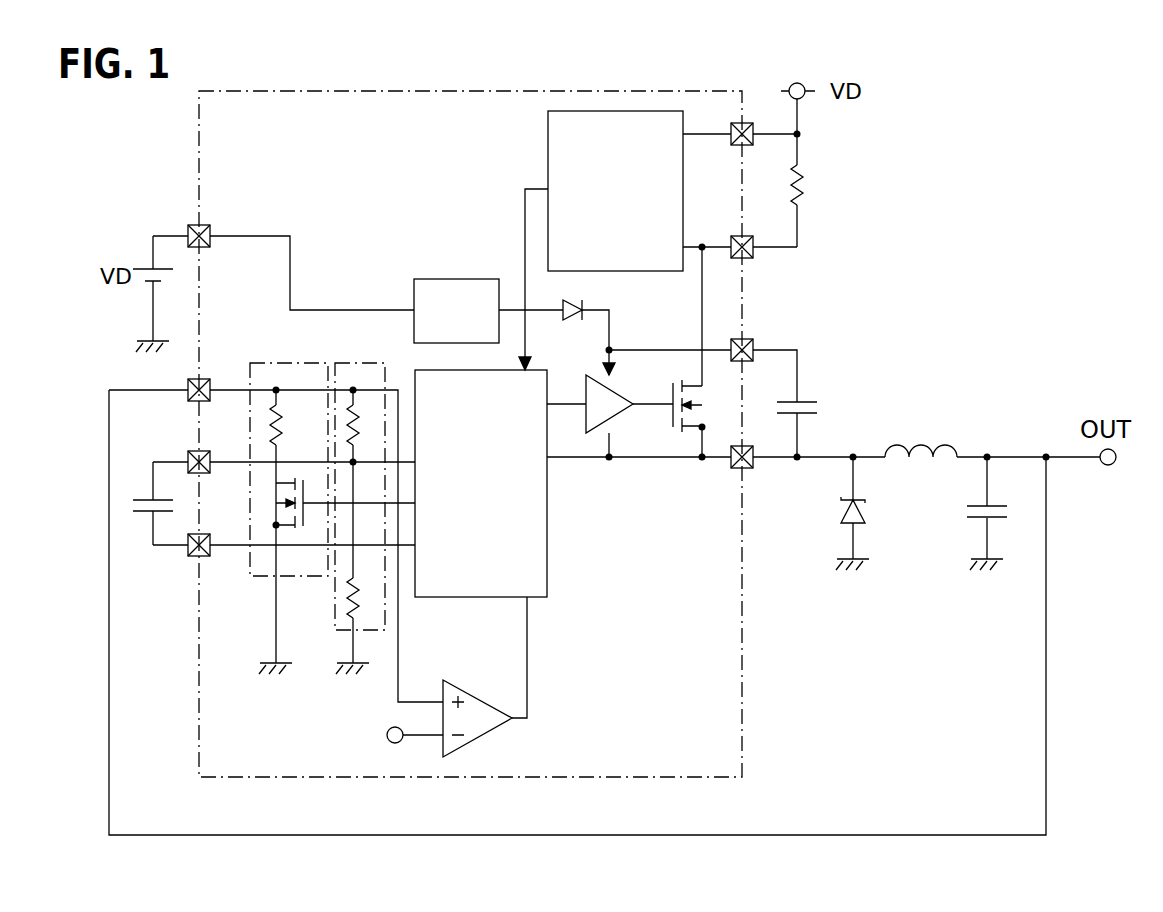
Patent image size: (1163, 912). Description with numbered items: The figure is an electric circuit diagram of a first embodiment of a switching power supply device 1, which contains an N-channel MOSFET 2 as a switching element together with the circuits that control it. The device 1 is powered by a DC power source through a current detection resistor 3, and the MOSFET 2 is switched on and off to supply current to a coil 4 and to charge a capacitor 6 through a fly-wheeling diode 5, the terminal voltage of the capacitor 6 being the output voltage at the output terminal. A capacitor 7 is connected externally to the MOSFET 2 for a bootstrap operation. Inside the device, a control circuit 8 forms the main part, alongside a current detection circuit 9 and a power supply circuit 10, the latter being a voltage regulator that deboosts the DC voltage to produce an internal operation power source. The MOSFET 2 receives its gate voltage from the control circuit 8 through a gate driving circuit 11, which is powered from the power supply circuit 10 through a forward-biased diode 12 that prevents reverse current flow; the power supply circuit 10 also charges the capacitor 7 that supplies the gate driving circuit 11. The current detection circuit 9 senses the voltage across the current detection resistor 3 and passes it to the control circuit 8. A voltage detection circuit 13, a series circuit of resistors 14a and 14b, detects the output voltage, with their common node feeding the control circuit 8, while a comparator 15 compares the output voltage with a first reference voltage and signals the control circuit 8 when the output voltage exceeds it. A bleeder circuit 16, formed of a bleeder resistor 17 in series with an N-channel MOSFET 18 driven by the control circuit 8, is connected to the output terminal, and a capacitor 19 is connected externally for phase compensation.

The switching power supply device 1 is at (744, 635).
The N-channel MOSFET 2 is at (676, 445).
The current detection resistor 3 is at (810, 188).
The coil 4 is at (922, 445).
The fly-wheeling diode 5 is at (843, 513).
The capacitor 6 is at (968, 513).
The capacitor 7 is at (820, 412).
The control circuit 8 is at (548, 542).
The current detection circuit 9 is at (548, 140).
The power supply circuit 10 is at (452, 279).
The gate driving circuit 11 is at (586, 390).
The diode 12 is at (585, 302).
The voltage detection circuit 13 is at (342, 365).
The resistor 14a is at (356, 425).
The resistor 14b is at (365, 595).
The comparator 15 is at (480, 695).
The bleeder circuit 16 is at (312, 578).
The bleeder resistor 17 is at (282, 432).
The N-channel MOSFET 18 is at (270, 503).
The capacitor 19 is at (145, 520).